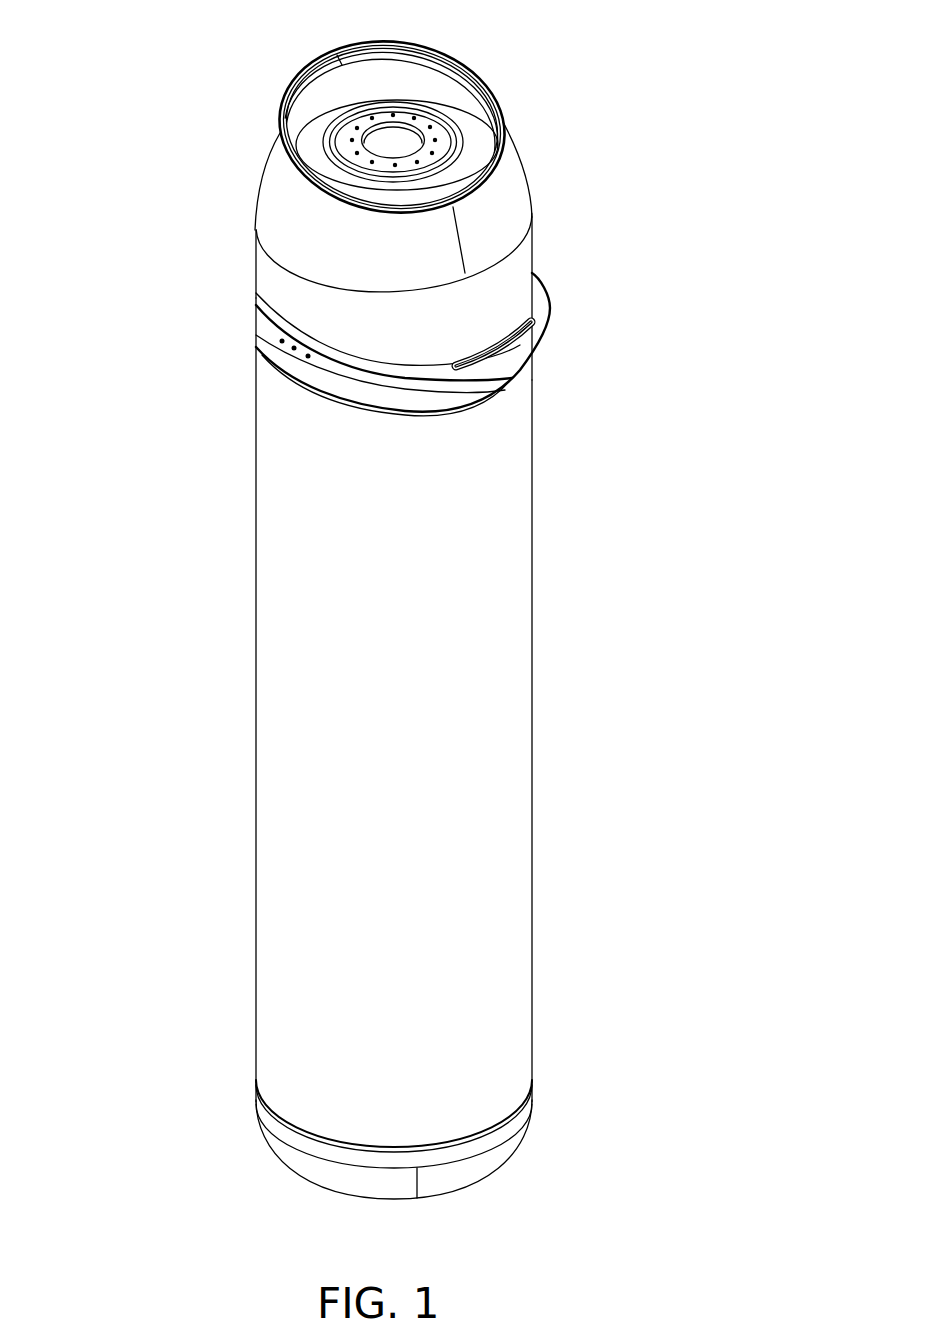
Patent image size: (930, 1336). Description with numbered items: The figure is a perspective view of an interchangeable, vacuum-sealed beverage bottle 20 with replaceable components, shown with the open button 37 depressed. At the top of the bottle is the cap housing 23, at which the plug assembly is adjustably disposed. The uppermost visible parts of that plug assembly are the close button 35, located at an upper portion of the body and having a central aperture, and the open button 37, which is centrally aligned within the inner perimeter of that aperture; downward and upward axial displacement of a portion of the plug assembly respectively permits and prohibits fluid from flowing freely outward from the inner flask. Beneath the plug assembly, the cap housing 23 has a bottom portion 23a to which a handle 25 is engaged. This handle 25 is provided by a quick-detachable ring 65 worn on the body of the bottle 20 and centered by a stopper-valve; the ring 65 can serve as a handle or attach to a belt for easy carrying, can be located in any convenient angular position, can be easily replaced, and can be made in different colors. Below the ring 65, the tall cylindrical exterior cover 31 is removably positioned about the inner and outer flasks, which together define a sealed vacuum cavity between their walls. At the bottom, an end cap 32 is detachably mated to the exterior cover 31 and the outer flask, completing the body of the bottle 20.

The vacuum-sealed beverage bottle 20 is at (172, 154).
The cap housing 23 is at (510, 202).
The bottom portion of the cap housing 23a is at (508, 293).
The handle 25 is at (540, 317).
The exterior cover 31 is at (508, 778).
The end cap 32 is at (500, 1155).
The close button 35 is at (423, 120).
The open button 37 is at (402, 143).
The quick-detachable ring 65 is at (540, 355).